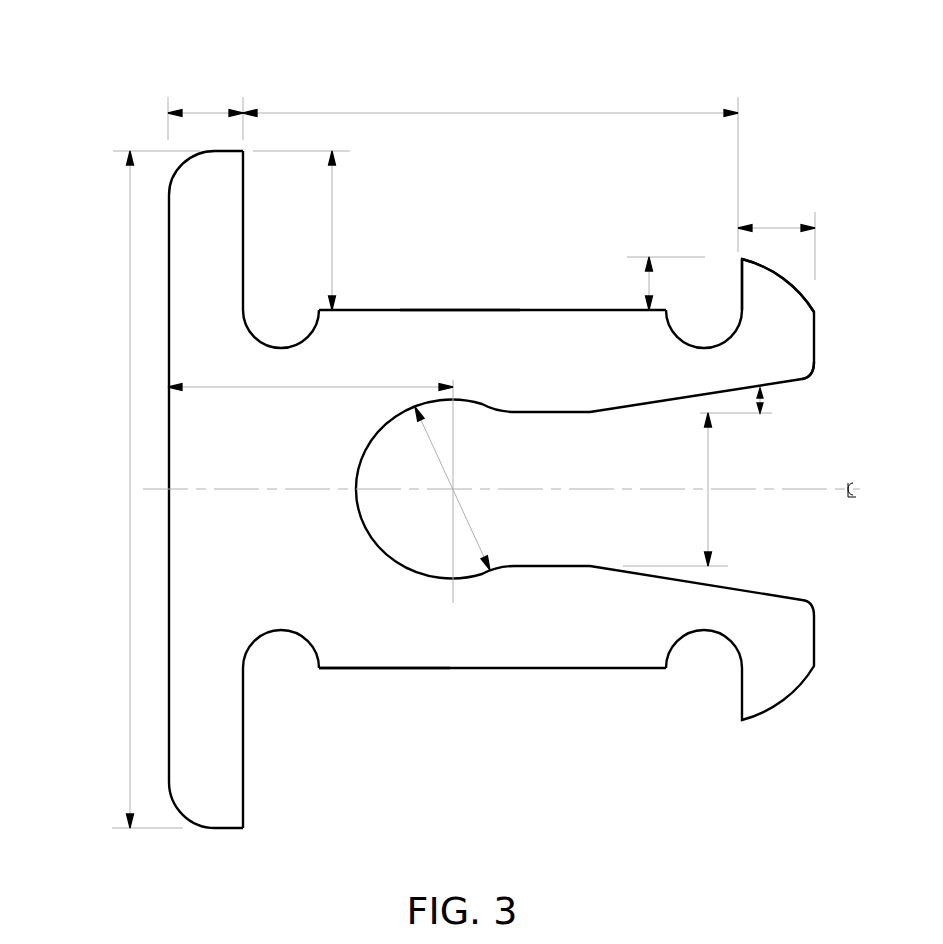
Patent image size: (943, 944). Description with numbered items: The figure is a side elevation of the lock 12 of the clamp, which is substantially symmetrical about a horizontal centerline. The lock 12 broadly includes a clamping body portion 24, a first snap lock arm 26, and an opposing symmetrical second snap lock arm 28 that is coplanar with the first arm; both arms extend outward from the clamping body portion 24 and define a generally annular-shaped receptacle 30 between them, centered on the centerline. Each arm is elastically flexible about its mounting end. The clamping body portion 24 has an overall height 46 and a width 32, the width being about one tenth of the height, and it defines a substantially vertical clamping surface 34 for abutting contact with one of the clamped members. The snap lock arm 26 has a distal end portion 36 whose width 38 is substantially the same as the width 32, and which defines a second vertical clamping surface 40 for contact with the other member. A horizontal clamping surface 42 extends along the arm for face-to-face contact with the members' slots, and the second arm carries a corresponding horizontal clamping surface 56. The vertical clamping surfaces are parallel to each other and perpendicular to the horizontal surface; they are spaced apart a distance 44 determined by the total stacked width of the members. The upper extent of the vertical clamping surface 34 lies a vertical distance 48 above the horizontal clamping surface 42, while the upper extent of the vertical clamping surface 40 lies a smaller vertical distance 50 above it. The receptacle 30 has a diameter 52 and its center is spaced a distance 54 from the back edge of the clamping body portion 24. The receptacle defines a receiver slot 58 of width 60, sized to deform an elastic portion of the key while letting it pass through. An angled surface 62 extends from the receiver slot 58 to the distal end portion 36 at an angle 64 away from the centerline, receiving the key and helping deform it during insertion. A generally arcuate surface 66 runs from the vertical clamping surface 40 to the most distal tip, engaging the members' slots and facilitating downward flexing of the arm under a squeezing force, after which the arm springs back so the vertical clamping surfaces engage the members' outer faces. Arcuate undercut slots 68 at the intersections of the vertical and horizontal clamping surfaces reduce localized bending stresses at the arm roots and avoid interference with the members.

The lock 12 is at (810, 120).
The clamping body portion 24 is at (230, 783).
The first snap lock arm 26 is at (400, 325).
The second snap lock arm 28 is at (585, 668).
The annular-shaped receptacle 30 is at (481, 402).
The width 32 is at (207, 113).
The vertical clamping surface 34 is at (245, 240).
The distal end portion 36 is at (803, 333).
The width 38 is at (783, 228).
The vertical clamping surface 40 is at (740, 280).
The horizontal clamping surface 42 is at (455, 310).
The distance 44 is at (497, 113).
The overall height 46 is at (126, 490).
The vertical distance 48 is at (334, 183).
The vertical distance 50 is at (627, 257).
The diameter 52 is at (492, 572).
The distance 54 is at (265, 390).
The horizontal clamping surface 56 is at (367, 668).
The receiver slot 58 is at (558, 543).
The width 60 is at (712, 522).
The angled surface 62 is at (818, 378).
The angle 64 is at (770, 400).
The arcuate surface 66 is at (806, 290).
The arcuate undercut slots 68 is at (310, 341).